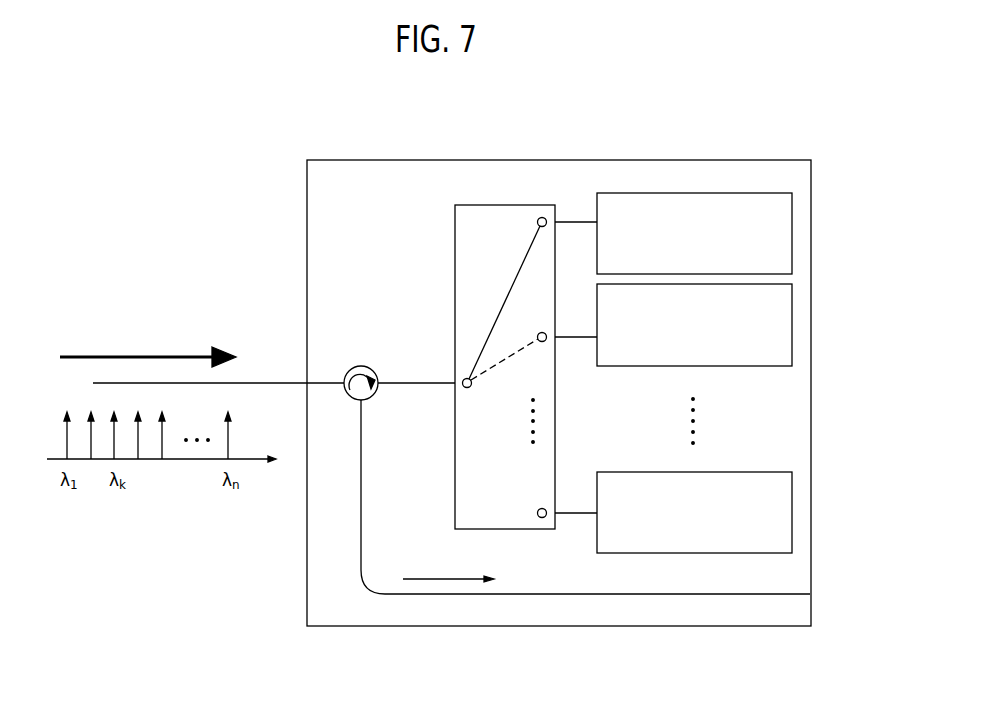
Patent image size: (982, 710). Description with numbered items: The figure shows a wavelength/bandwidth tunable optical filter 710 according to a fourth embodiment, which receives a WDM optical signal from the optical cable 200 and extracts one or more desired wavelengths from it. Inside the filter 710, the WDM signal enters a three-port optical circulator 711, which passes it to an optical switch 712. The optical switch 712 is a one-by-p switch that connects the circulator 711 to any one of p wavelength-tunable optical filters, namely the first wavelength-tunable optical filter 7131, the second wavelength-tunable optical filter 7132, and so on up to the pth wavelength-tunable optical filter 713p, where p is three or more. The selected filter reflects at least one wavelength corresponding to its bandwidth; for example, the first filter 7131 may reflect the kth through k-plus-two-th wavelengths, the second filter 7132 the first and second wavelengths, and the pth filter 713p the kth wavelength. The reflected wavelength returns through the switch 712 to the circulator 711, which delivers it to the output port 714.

The optical cable 200 is at (262, 383).
The wavelength/bandwidth tunable optical filter 710 is at (726, 160).
The optical circulator 711 is at (360, 366).
The optical switch 712 is at (518, 529).
The first wavelength-tunable optical filter 7131 is at (792, 216).
The second wavelength-tunable optical filter 7132 is at (792, 333).
The pth wavelength-tunable optical filter 713p is at (792, 512).
The output port 714 is at (760, 594).